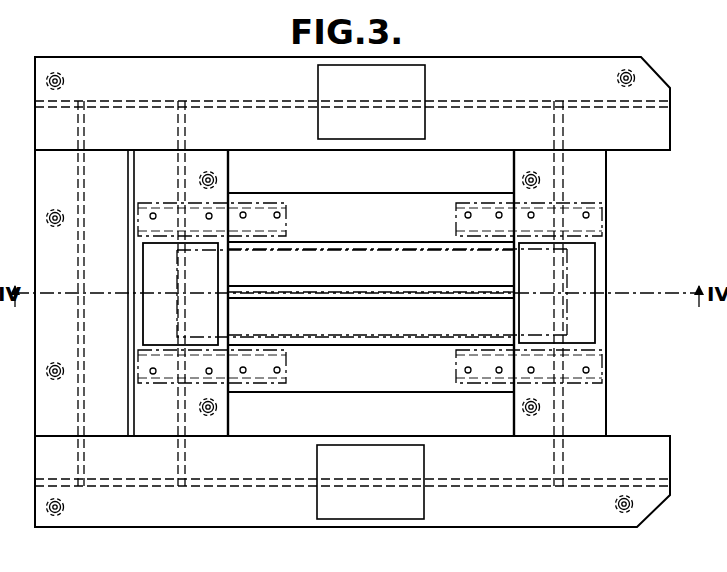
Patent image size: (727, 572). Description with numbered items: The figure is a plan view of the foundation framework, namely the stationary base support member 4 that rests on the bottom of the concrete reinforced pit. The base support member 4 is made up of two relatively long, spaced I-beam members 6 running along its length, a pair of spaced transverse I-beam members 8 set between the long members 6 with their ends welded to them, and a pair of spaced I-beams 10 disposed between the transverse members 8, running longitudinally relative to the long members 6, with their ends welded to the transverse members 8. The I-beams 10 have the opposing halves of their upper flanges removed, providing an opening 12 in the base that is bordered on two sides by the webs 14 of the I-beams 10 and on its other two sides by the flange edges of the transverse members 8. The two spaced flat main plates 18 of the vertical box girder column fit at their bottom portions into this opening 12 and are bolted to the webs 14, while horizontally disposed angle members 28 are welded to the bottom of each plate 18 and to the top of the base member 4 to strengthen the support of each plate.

The stationary base support member 4 is at (232, 42).
The long spaced I-beam members 6 is at (497, 63).
The transverse I-beam members 8 is at (219, 405).
The I-beams 10 is at (383, 196).
The opening 12 is at (425, 300).
The webs 14 is at (361, 240).
The flat main plates 18 is at (456, 250).
The angle members 28 is at (148, 217).